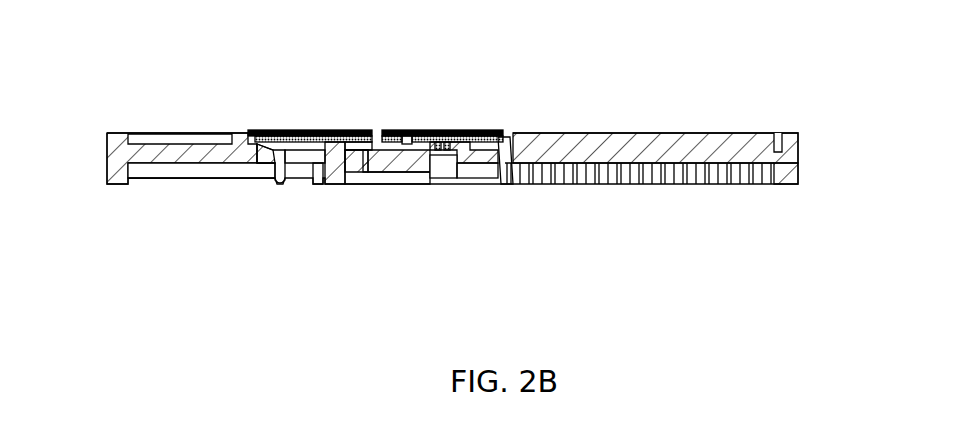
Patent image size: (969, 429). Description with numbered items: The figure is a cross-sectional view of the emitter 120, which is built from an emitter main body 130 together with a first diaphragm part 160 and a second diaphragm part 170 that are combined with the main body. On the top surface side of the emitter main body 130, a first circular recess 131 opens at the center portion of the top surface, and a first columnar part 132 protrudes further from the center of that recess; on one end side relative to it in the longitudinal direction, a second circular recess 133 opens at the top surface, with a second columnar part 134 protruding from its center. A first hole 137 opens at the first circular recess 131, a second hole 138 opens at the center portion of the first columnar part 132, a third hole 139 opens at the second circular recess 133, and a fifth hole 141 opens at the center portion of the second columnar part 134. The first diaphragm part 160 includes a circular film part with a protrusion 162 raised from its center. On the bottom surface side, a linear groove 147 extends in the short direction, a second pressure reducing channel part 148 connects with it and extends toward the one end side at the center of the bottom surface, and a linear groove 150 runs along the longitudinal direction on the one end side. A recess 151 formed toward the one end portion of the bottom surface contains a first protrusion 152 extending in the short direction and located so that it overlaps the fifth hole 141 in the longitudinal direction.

The emitter 120 is at (773, 71).
The emitter main body 130 is at (113, 133).
The first circular recess 131 is at (392, 130).
The first columnar part 132 is at (460, 130).
The second circular recess 133 is at (344, 130).
The second columnar part 134 is at (271, 130).
The first hole 137 is at (492, 184).
The second hole 138 is at (450, 184).
The third hole 139 is at (357, 184).
The fifth hole 141 is at (313, 182).
The linear groove 147 is at (770, 184).
The second pressure reducing channel part 148 is at (622, 184).
The linear groove 150 is at (400, 184).
The recess 151 is at (200, 178).
The first protrusion 152 is at (280, 184).
The first diaphragm part 160 is at (497, 130).
The protrusion 162 is at (428, 130).
The second diaphragm part 170 is at (300, 130).